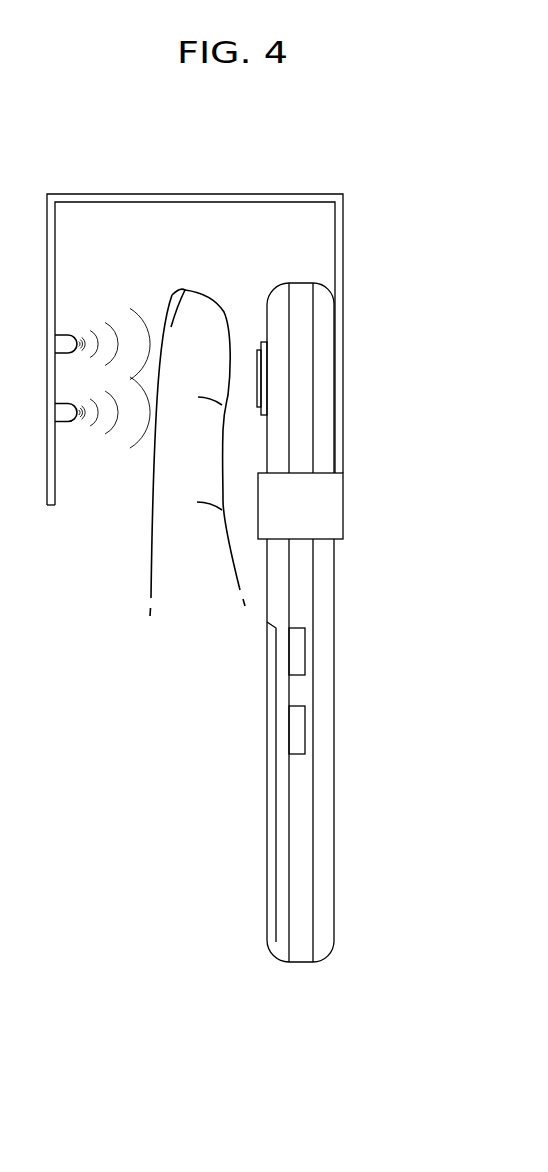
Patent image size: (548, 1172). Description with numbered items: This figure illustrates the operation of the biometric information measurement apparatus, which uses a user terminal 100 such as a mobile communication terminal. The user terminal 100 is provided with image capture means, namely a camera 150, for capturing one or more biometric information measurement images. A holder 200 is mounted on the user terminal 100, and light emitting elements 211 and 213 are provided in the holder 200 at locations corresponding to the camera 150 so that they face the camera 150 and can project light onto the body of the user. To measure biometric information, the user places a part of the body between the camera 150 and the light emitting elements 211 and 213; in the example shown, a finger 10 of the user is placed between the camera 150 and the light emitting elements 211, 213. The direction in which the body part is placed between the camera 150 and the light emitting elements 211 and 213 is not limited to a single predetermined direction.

The finger 10 is at (172, 295).
The user terminal 100 is at (334, 597).
The camera 150 is at (257, 368).
The holder 200 is at (228, 194).
The light emitting element 211 is at (72, 335).
The light emitting element 213 is at (72, 422).